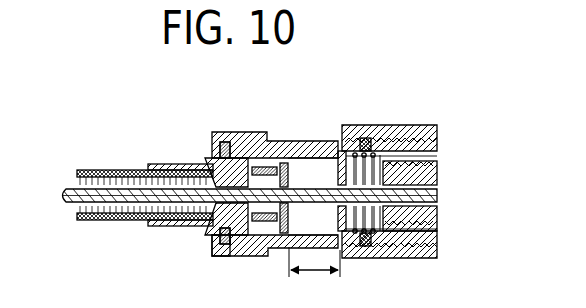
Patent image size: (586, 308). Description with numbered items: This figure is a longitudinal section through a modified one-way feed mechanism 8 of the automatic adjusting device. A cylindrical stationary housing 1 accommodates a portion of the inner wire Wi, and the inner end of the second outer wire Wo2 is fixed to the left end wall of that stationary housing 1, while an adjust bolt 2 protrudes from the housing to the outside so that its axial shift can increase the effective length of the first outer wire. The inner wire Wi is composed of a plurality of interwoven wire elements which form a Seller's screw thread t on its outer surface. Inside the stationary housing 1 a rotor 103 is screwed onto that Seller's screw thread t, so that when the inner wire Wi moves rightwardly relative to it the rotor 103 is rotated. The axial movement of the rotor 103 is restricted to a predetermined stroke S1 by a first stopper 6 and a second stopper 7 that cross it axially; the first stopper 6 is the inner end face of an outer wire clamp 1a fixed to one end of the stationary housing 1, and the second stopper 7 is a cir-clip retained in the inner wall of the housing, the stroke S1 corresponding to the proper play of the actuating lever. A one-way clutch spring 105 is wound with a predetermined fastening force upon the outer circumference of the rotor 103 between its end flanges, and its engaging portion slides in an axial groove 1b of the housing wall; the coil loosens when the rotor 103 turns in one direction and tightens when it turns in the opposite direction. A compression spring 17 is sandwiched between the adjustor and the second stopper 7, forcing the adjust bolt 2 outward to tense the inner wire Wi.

The inner wire Wi is at (67, 185).
The second outer wire Wo2 is at (108, 170).
The outer wire clamp 1a is at (177, 164).
The axial groove 1b is at (263, 257).
The stationary housing 1 is at (340, 131).
The adjust bolt 2 is at (397, 258).
The first stopper 6 is at (246, 158).
The second stopper 7 is at (332, 157).
The one-way feed mechanism 8 is at (278, 250).
The rotor 103 is at (285, 204).
The one-way clutch spring 105 is at (268, 167).
The compression spring 17 is at (364, 247).
The Seller's screw thread t is at (315, 192).
The predetermined stroke S1 is at (314, 264).